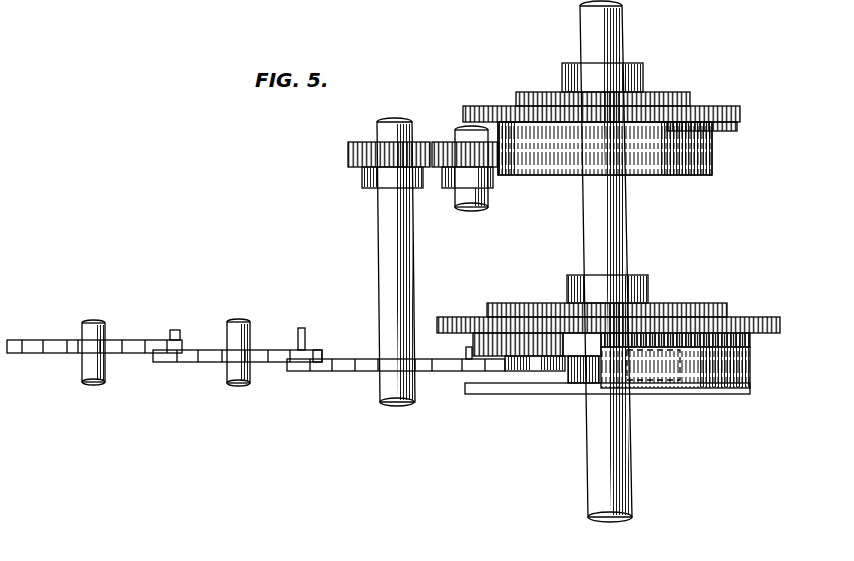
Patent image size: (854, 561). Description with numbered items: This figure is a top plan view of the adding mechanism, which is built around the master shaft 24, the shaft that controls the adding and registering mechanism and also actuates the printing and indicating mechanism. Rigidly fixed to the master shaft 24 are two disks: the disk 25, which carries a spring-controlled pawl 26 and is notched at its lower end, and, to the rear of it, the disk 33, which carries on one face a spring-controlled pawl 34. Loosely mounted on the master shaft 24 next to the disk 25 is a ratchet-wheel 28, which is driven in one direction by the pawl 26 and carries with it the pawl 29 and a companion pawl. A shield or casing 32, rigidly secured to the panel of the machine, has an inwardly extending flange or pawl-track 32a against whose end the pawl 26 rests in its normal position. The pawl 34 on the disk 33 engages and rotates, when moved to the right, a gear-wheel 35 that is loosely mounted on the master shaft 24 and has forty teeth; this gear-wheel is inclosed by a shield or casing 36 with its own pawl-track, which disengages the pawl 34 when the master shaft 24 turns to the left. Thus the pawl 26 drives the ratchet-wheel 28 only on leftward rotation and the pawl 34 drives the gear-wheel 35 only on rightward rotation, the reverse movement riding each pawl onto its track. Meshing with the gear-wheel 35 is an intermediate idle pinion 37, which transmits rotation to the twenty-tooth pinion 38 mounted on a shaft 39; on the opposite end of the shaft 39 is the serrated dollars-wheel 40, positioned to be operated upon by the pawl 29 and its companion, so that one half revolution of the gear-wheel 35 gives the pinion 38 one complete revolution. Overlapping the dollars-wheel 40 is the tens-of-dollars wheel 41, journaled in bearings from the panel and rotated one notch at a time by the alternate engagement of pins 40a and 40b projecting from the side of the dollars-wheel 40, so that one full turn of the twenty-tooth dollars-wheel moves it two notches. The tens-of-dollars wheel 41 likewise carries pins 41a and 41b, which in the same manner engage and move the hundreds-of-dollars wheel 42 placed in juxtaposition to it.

The master shaft 24 is at (626, 243).
The disk 25 is at (749, 312).
The spring-controlled pawl 26 is at (750, 348).
The ratchet-wheel 28 is at (502, 338).
The pawl 29 is at (523, 373).
The shield or casing 32 is at (553, 385).
The flange or pawl-track 32a is at (680, 357).
The disk 33 is at (621, 107).
The spring-controlled pawl 34 is at (708, 128).
The gear-wheel 35 is at (653, 158).
The shield or casing 36 is at (587, 152).
The intermediate idle pinion 37 is at (450, 140).
The pinion 38 is at (352, 157).
The shaft 39 is at (414, 255).
The dollars-wheel 40 is at (353, 369).
The pin 40a is at (445, 345).
The pin 40b is at (323, 351).
The tens-of-dollars wheel 41 is at (185, 364).
The pin 41a is at (304, 333).
The pin 41b is at (176, 332).
The hundreds-of-dollars wheel 42 is at (47, 356).